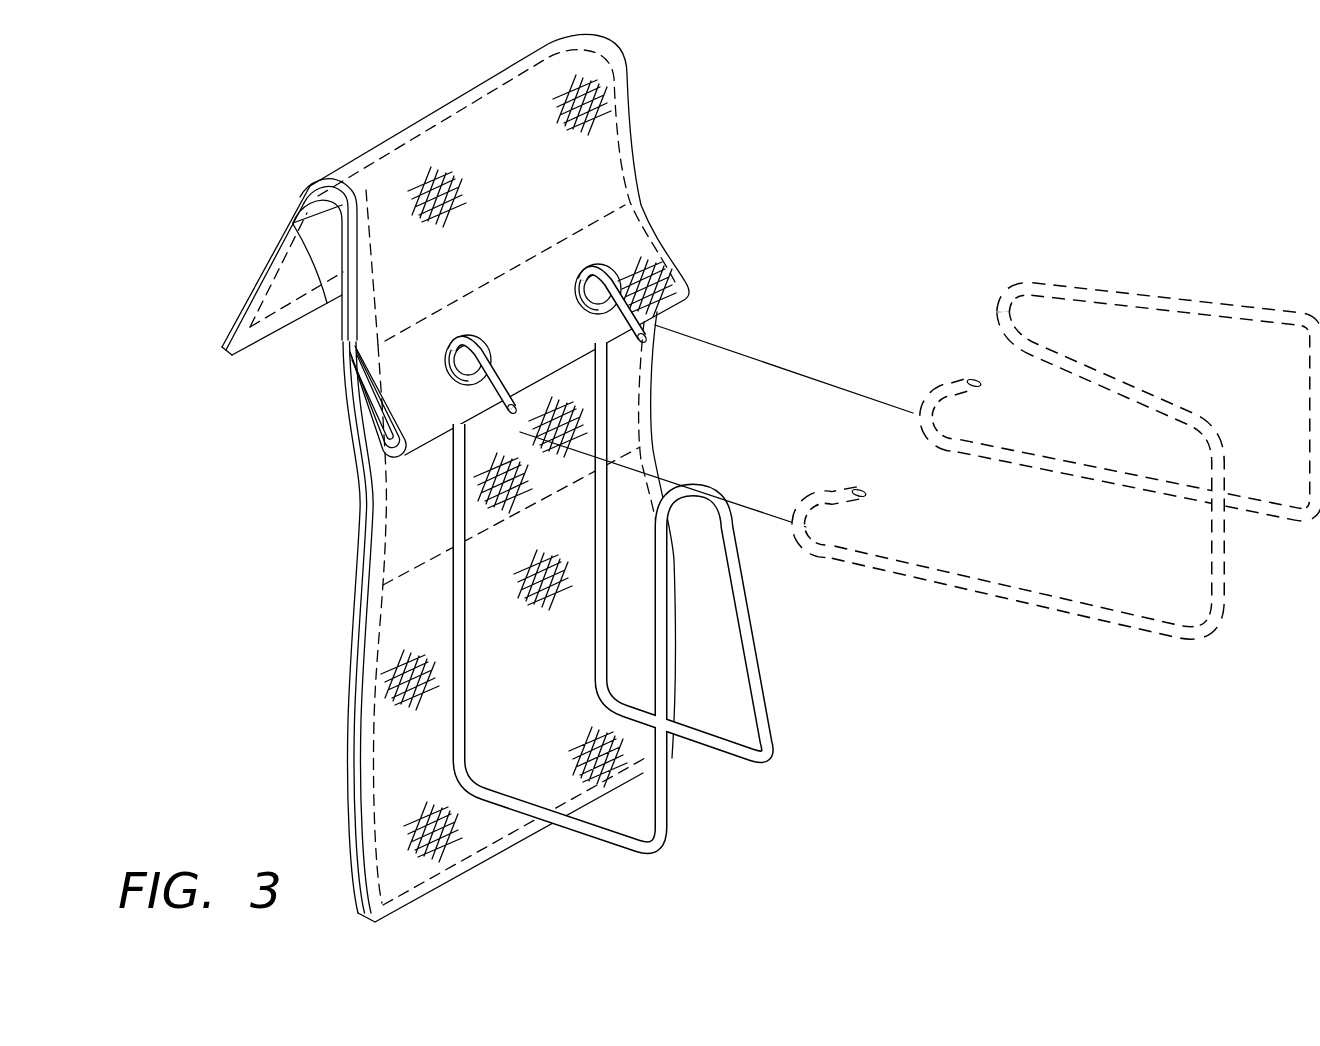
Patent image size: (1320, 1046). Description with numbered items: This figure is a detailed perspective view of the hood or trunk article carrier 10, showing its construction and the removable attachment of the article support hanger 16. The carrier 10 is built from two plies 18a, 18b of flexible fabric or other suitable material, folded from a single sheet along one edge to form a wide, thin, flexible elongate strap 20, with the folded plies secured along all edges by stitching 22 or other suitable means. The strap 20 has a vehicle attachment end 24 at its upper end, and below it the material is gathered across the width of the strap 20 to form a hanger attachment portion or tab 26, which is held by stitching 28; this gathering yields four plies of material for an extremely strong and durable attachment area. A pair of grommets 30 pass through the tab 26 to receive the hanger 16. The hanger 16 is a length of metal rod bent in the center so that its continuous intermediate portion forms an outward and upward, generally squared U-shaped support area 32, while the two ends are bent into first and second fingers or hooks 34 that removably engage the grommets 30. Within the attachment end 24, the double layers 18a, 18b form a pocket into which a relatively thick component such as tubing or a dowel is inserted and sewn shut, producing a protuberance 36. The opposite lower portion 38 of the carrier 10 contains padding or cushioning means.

The article carrier 10 is at (240, 676).
The article support hanger 16 is at (915, 585).
The ply 18a is at (240, 283).
The ply 18b is at (272, 334).
The strap 20 is at (536, 214).
The stitching 22 is at (378, 510).
The vehicle attachment end 24 is at (265, 223).
The hanger attachment portion 26 is at (540, 328).
The stitching 28 is at (476, 294).
The grommets 30 is at (583, 316).
The support area 32 is at (725, 760).
The hooks 34 is at (489, 392).
The protuberance 36 is at (313, 282).
The lower portion 38 is at (533, 706).